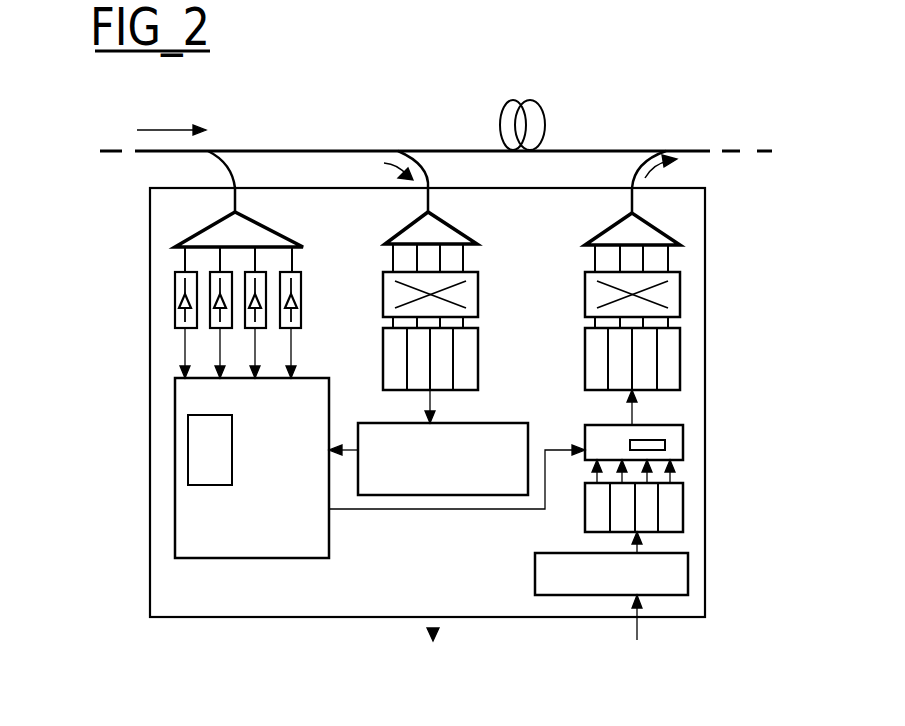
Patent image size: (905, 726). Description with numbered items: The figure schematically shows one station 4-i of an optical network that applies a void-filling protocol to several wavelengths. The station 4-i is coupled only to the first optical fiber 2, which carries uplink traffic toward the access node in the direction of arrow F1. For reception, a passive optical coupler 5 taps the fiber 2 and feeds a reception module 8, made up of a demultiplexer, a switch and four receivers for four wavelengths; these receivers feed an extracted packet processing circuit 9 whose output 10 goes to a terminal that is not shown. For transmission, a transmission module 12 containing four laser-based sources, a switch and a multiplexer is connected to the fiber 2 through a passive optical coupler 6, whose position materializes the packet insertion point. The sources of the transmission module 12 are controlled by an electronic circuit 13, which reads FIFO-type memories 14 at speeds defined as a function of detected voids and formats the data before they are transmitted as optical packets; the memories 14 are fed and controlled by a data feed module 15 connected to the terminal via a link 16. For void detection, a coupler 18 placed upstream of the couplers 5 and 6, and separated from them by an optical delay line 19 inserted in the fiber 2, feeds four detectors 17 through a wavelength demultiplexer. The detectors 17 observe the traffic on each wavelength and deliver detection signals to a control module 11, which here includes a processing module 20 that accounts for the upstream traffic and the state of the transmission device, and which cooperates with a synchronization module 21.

The first optical fiber 2 is at (322, 151).
The arrow F1 is at (162, 129).
The station 4-i is at (150, 576).
The passive optical coupler 5 is at (427, 152).
The passive optical coupler 6 is at (634, 172).
The reception module 8 is at (478, 292).
The extracted packet processing circuit 9 is at (528, 434).
The output 10 is at (437, 650).
The control module 11 is at (175, 508).
The transmission module 12 is at (680, 290).
The electronic circuit 13 is at (683, 447).
The memories 14 is at (683, 500).
The data feed module 15 is at (688, 565).
The link 16 is at (641, 638).
The detectors 17 is at (283, 328).
The coupler 18 is at (232, 152).
The optical delay line 19 is at (545, 115).
The processing module 20 is at (188, 438).
The synchronization module 21 is at (685, 437).